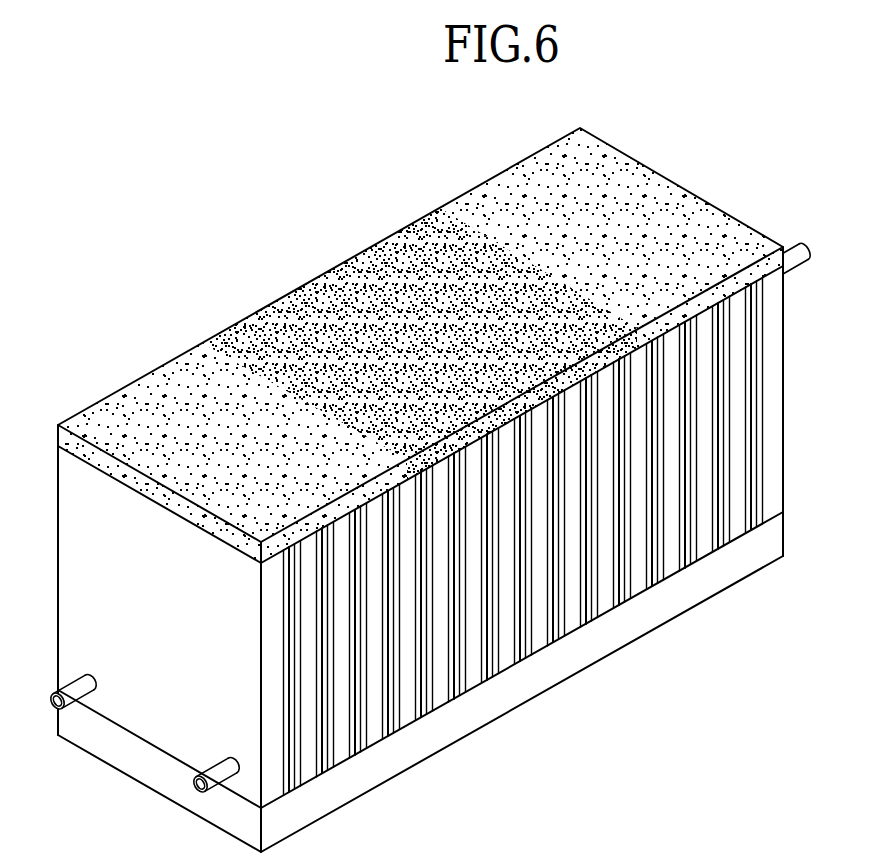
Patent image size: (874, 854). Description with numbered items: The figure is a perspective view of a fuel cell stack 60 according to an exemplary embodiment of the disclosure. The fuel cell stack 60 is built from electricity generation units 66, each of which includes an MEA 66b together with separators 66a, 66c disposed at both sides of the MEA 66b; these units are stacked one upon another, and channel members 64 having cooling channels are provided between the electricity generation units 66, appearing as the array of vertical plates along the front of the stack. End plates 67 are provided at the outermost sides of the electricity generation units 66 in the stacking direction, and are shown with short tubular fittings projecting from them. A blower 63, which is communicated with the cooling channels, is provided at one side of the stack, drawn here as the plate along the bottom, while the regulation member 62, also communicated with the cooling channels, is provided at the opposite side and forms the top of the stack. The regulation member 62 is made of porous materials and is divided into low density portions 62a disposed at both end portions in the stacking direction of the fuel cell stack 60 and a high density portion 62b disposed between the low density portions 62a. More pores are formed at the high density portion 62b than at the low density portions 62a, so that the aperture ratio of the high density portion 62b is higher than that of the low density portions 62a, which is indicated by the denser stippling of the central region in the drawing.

The fuel cell stack 60 is at (272, 161).
The regulation member 62 is at (420, 329).
The low density portions 62a is at (523, 183).
The high density portion 62b is at (328, 293).
The blower 63 is at (393, 757).
The channel members 64 is at (420, 559).
The electricity generation unit 66 is at (646, 569).
The separator 66a is at (580, 622).
The MEA 66b is at (586, 608).
The separator 66c is at (592, 602).
The end plates 67 is at (145, 716).